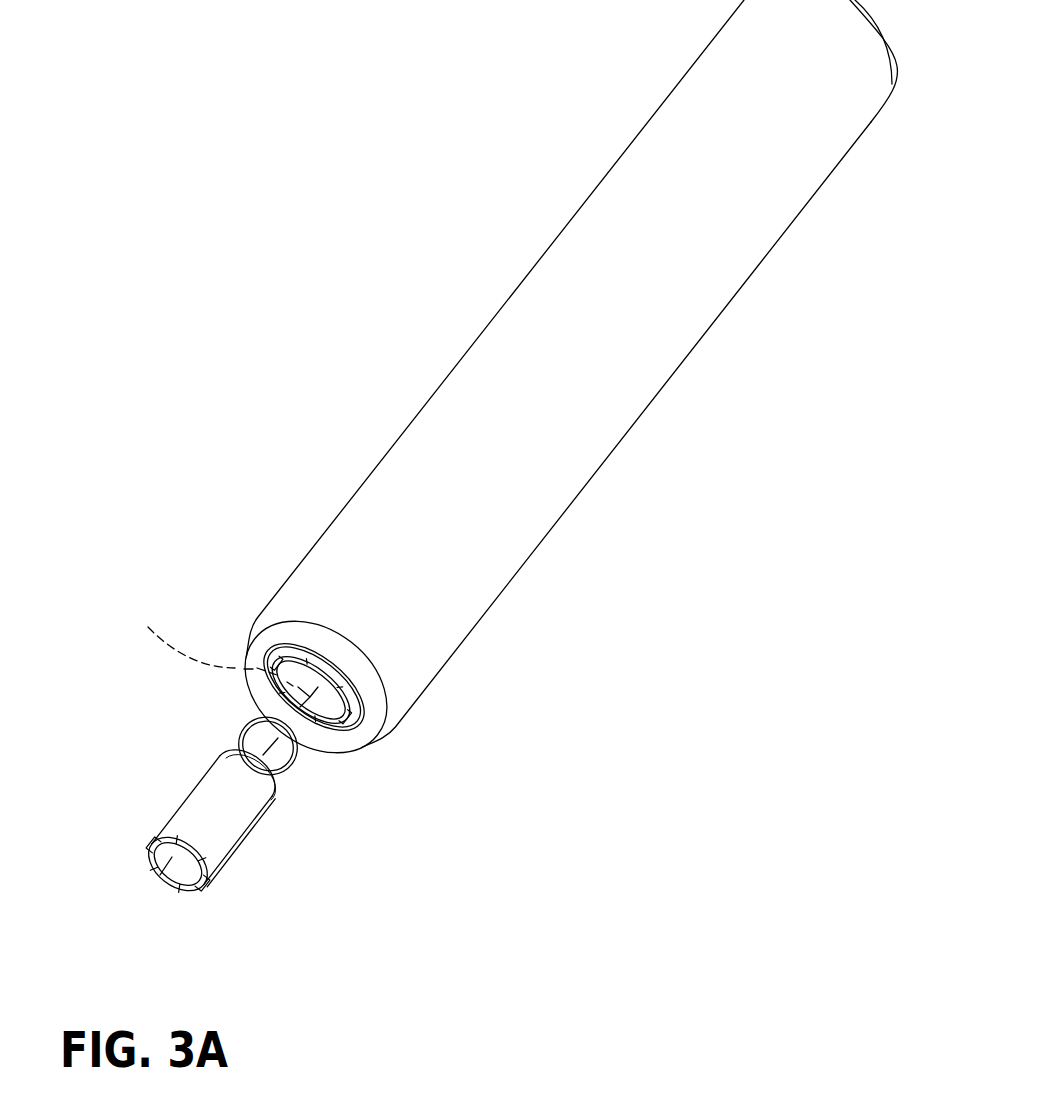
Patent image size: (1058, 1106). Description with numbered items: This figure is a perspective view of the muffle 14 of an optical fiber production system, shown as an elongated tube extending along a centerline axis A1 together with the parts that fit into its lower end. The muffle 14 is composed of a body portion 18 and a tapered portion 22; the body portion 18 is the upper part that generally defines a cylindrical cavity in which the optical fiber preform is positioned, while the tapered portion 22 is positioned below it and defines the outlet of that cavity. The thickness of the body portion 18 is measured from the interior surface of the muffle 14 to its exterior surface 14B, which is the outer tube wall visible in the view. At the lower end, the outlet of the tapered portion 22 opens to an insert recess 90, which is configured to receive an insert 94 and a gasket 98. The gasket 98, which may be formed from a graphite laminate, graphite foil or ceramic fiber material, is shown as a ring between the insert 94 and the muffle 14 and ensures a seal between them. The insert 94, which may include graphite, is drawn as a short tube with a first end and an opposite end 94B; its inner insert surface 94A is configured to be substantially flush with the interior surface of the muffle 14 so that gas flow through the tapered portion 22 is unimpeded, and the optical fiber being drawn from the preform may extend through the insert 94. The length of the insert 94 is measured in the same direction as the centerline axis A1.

The muffle 14 is at (617, 492).
The exterior surface 14B is at (658, 335).
The body portion 18 is at (818, 193).
The tapered portion 22 is at (447, 663).
The insert recess 90 is at (318, 705).
The insert 94 is at (263, 822).
The inner insert surface 94A is at (170, 856).
The second end of insert 94B is at (193, 787).
The gasket 98 is at (243, 726).
The centerline axis A1 is at (206, 635).